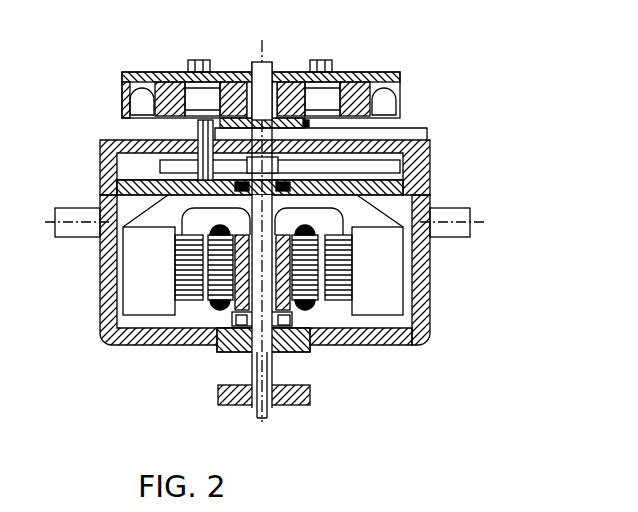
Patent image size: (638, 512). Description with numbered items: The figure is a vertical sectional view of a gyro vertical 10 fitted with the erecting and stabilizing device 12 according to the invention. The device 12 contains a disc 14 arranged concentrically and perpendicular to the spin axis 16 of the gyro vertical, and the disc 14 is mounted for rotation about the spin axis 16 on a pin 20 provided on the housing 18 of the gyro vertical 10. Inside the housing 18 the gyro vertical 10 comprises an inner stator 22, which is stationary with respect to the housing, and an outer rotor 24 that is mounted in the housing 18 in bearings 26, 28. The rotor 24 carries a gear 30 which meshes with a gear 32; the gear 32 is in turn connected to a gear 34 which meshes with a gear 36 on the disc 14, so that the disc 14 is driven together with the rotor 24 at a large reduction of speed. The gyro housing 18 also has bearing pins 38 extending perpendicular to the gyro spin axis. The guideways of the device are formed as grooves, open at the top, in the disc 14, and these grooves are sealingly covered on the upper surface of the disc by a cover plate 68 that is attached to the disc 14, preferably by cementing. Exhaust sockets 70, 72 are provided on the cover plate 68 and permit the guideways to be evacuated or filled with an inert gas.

The gyro vertical 10 is at (429, 200).
The device for erecting and stabilizing the gyro vertical 12 is at (355, 72).
The disc 14 is at (414, 104).
The spin axis 16 is at (262, 50).
The housing 18 is at (415, 290).
The pin 20 is at (268, 60).
The inner stator 22 is at (222, 315).
The outer rotor 24 is at (146, 300).
The bearing 26 is at (289, 170).
The bearing 28 is at (275, 382).
The gear 30 is at (297, 125).
The gear 32 is at (103, 176).
The gear 34 is at (198, 134).
The gear 36 is at (333, 120).
The bearing pins 38 is at (90, 236).
The cover plate 68 is at (147, 72).
The exhaust socket 70 is at (206, 53).
The exhaust socket 72 is at (322, 60).